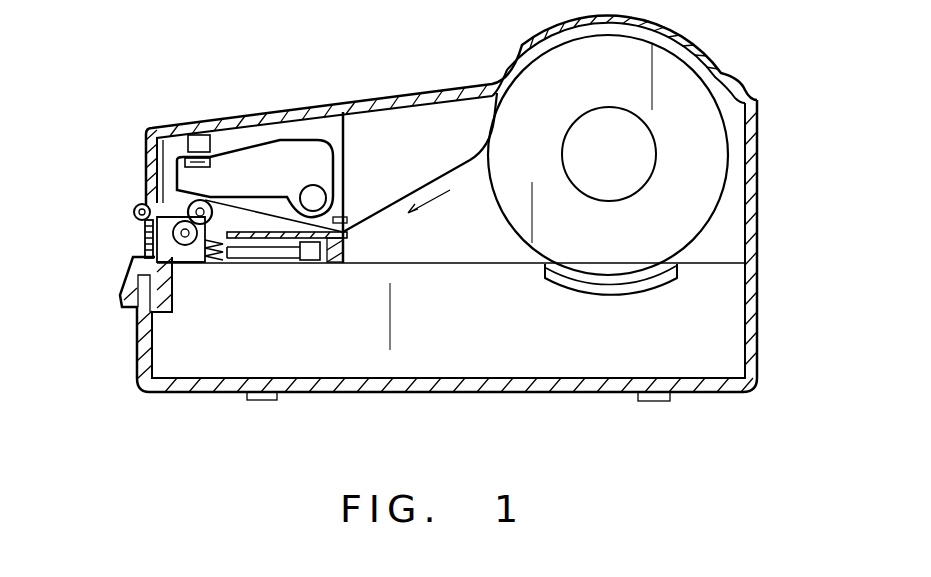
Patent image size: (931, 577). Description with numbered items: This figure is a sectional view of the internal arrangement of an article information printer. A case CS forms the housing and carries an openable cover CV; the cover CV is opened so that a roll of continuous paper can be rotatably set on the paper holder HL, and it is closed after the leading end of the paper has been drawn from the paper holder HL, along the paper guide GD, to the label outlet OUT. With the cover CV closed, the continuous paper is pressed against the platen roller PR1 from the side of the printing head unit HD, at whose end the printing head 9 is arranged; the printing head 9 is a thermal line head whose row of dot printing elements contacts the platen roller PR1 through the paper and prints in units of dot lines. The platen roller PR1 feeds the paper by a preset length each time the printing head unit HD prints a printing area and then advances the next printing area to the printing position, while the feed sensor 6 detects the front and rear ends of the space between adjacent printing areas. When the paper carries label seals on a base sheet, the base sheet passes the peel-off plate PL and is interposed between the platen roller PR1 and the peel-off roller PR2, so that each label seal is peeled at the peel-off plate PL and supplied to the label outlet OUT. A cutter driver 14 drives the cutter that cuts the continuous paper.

The case CS is at (697, 393).
The cover CV is at (515, 52).
The paper holder HL is at (668, 68).
The printing head unit HD is at (258, 162).
The printing head 9 is at (214, 158).
The paper guide GD is at (420, 188).
The platen roller PR1 is at (196, 202).
The peel-off roller PR2 is at (183, 248).
The label outlet OUT is at (140, 205).
The peel-off plate PL is at (143, 235).
The cutter driver 14 is at (155, 172).
The feed sensor 6 is at (341, 263).